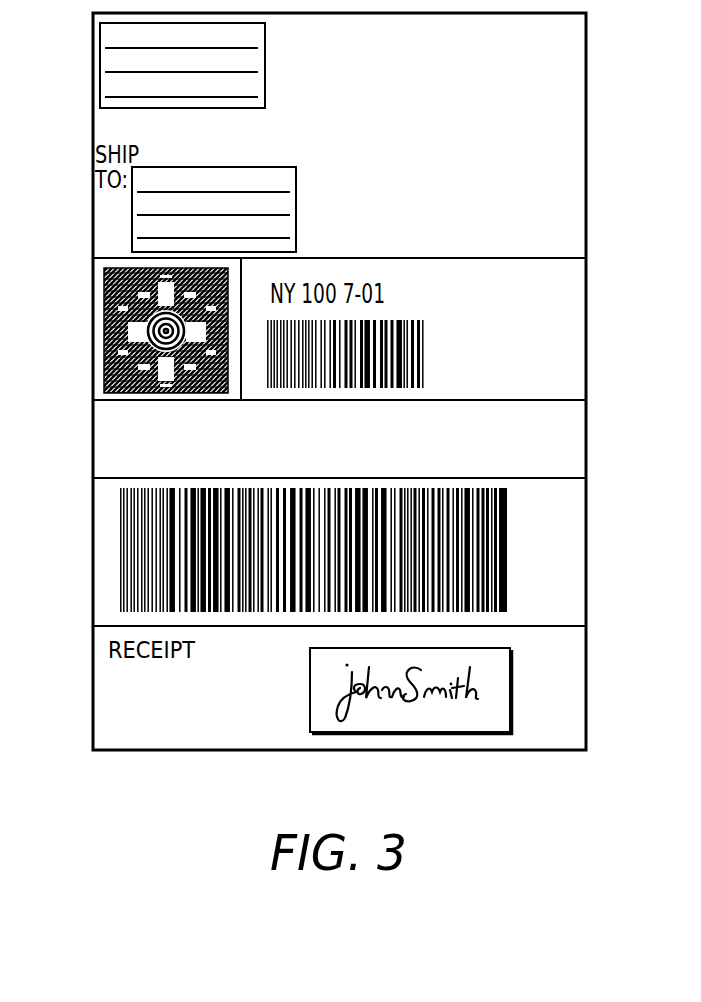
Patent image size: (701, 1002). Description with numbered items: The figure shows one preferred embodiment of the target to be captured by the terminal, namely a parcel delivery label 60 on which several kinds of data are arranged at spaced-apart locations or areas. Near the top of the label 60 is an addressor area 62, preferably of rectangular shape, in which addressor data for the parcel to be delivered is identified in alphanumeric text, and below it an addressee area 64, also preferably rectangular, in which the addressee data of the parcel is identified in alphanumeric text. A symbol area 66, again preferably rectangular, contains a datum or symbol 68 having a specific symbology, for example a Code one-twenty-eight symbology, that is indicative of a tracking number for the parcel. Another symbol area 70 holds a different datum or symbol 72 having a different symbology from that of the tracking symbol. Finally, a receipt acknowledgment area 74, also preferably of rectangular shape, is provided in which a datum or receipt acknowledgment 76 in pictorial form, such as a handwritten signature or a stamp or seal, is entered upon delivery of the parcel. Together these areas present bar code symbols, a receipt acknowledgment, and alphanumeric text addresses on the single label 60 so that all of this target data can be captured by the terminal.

The parcel delivery label 60 is at (84, 510).
The addressor area 62 is at (265, 68).
The addressee area 64 is at (296, 209).
The symbol area 66 is at (578, 521).
The symbol 68 is at (512, 571).
The another symbol area 70 is at (108, 293).
The symbol 72 is at (131, 329).
The receipt acknowledgment area 74 is at (409, 691).
The receipt acknowledgment 76 is at (496, 689).